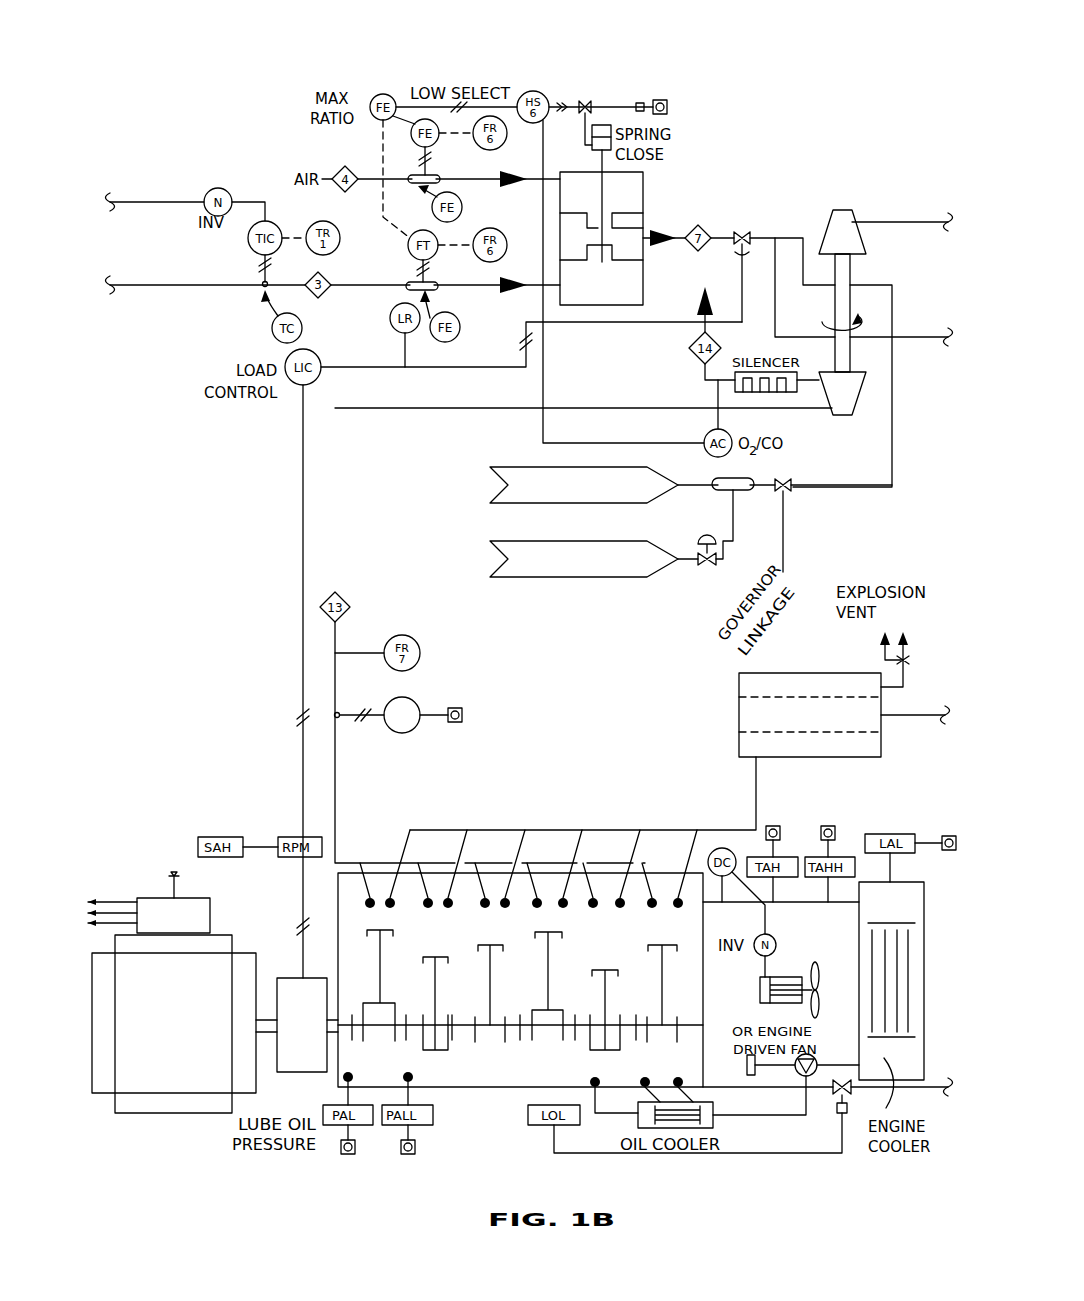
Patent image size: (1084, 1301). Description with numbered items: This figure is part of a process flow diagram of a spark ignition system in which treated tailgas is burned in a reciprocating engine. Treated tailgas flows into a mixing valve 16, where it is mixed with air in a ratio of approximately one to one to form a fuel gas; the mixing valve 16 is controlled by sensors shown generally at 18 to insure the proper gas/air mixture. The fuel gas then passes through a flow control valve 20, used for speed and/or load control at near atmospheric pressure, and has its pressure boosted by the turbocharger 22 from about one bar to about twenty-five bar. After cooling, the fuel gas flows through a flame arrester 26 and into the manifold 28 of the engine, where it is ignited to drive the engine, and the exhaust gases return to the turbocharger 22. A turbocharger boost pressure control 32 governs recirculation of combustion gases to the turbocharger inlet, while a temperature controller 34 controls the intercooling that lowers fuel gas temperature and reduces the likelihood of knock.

The mixing valve 16 is at (645, 195).
The sensors 18 is at (460, 74).
The flow control valve 20 is at (742, 232).
The turbocharger 22 is at (880, 217).
The flame arrester 26 is at (739, 706).
The manifold 28 is at (580, 828).
The turbocharger boost pressure control 32 is at (414, 690).
The temperature controller 34 is at (482, 527).